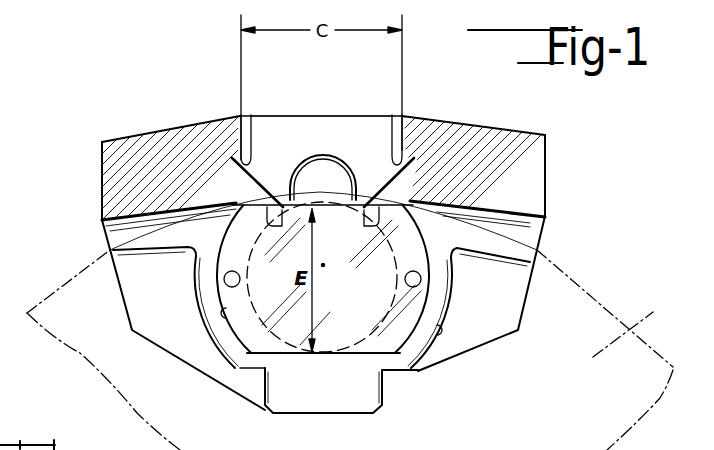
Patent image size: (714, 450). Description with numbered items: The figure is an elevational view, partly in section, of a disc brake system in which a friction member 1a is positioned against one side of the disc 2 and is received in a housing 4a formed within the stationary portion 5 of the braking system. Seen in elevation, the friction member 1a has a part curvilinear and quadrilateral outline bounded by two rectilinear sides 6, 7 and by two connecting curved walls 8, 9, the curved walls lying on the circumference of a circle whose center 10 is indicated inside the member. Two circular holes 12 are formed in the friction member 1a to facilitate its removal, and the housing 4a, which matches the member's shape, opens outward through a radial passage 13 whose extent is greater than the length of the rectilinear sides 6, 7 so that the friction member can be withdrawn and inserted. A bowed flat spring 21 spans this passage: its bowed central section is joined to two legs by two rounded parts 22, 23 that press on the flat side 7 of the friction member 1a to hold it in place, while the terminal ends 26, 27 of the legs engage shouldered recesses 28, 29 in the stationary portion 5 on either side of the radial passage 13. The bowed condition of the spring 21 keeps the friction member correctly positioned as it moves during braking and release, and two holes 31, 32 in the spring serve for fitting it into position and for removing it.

The friction member 1a is at (403, 333).
The disc 2 is at (645, 317).
The housing 4a is at (263, 357).
The stationary portion 5 is at (490, 140).
The rectilinear side 6 is at (335, 357).
The rectilinear side 7 is at (340, 210).
The curved wall 8 is at (228, 316).
The curved wall 9 is at (440, 329).
The center 10 is at (323, 265).
The holes 12 is at (224, 282).
The radial passage 13 is at (293, 133).
The spring 21 is at (323, 154).
The rounded part 22 is at (276, 214).
The rounded part 23 is at (395, 224).
The terminal end 26 is at (232, 122).
The terminal end 27 is at (411, 126).
The shouldered recess 28 is at (254, 127).
The shouldered recess 29 is at (391, 132).
The hole 31 is at (378, 188).
The hole 32 is at (258, 186).